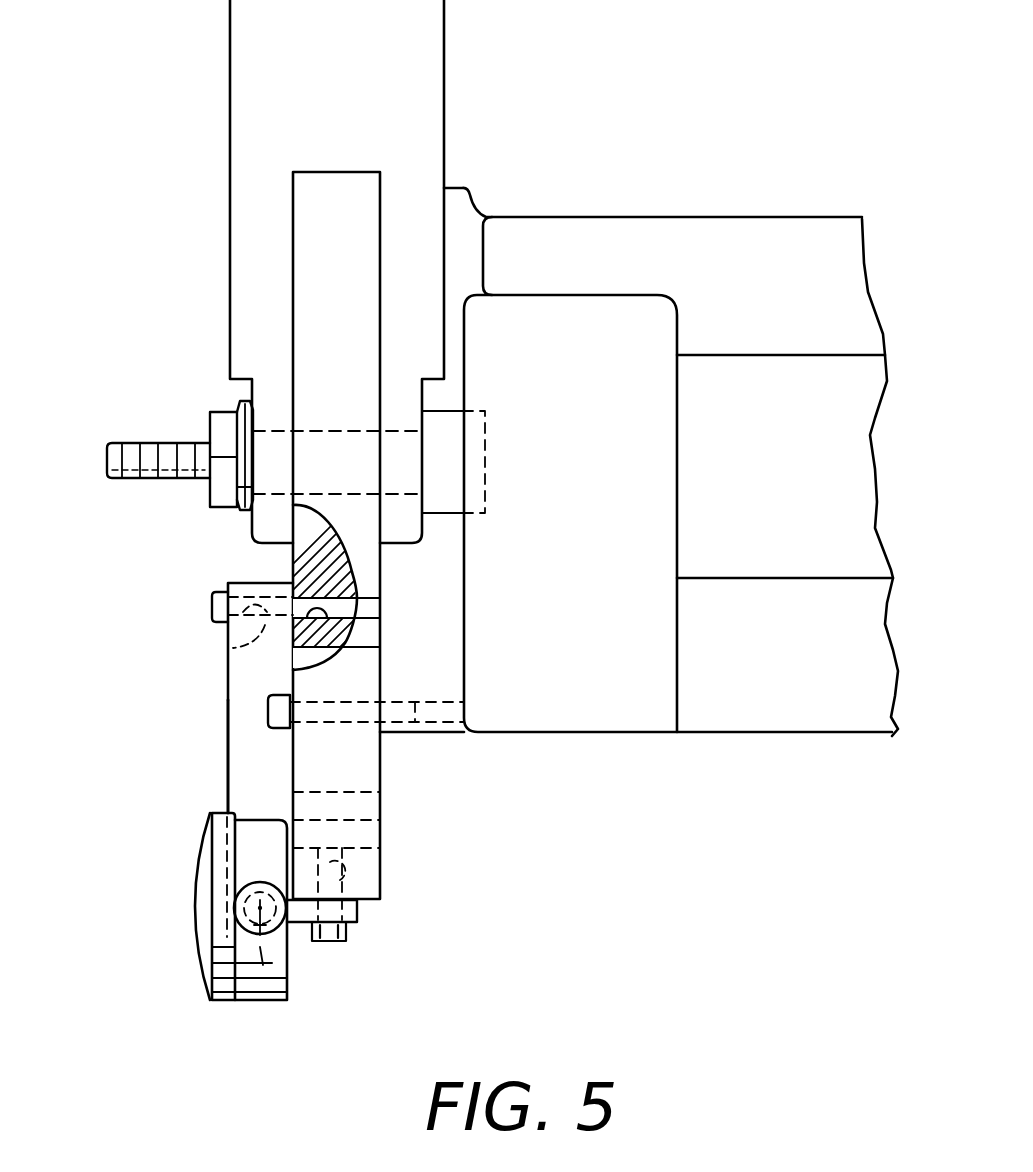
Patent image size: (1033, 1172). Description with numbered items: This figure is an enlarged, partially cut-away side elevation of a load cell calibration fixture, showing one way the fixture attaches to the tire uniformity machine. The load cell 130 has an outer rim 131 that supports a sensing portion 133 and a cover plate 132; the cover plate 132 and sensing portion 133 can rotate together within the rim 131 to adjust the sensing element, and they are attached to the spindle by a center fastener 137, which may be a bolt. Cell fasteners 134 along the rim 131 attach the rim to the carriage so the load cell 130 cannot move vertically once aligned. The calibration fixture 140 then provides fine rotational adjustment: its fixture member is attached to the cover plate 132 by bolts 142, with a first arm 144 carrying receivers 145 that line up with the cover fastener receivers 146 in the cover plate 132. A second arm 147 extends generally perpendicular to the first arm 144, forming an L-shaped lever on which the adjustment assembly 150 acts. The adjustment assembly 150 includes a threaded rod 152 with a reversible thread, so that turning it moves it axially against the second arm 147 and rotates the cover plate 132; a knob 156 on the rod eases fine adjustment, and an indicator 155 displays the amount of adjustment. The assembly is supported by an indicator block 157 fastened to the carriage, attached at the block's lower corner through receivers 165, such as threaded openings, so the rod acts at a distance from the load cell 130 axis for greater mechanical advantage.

The load cell 130 is at (300, 276).
The outer rim 131 is at (310, 340).
The cover plate 132 is at (293, 570).
The sensing portion 133 is at (297, 535).
The cell fasteners 134 is at (268, 715).
The center fastener 137 is at (208, 443).
The calibration fixture 140 is at (217, 747).
The bolts 142 is at (212, 608).
The first arm 144 is at (232, 586).
The receivers 145 is at (228, 649).
The cover fastener receivers 146 is at (293, 670).
The second arm 147 is at (247, 785).
The adjustment assembly 150 is at (296, 947).
The threaded rod 152 is at (262, 978).
The indicator 155 is at (203, 940).
The knob 156 is at (245, 880).
The indicator block 157 is at (362, 768).
The receivers 165 is at (382, 873).